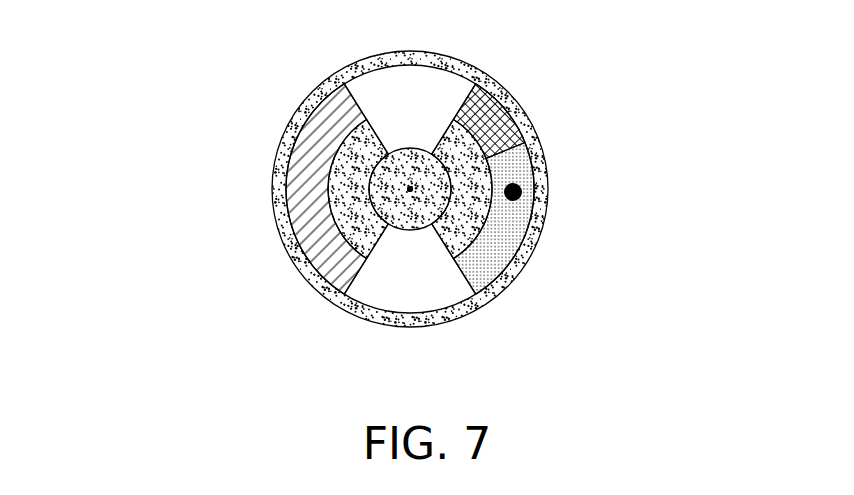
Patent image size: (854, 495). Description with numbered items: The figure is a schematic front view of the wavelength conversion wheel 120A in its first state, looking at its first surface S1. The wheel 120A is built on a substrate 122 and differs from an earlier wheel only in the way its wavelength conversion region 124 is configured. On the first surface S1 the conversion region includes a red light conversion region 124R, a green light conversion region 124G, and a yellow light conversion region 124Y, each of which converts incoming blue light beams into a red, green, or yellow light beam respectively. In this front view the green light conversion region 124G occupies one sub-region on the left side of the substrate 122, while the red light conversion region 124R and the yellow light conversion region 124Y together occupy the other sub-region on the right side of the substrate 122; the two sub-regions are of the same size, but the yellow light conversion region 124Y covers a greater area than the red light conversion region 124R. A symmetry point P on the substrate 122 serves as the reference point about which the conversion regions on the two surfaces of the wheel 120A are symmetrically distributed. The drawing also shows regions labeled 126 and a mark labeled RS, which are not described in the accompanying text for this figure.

The wavelength conversion wheel 120A is at (626, 407).
The substrate 122 is at (345, 218).
The wavelength conversion region 124 is at (706, 27).
The red light conversion region 124R is at (485, 120).
The green light conversion region 124G is at (302, 180).
The yellow light conversion region 124Y is at (493, 255).
The light-transmitting regions 126 is at (410, 83).
The reference mark RS is at (522, 192).
The symmetry point P is at (410, 192).
The first surface S1 is at (357, 165).